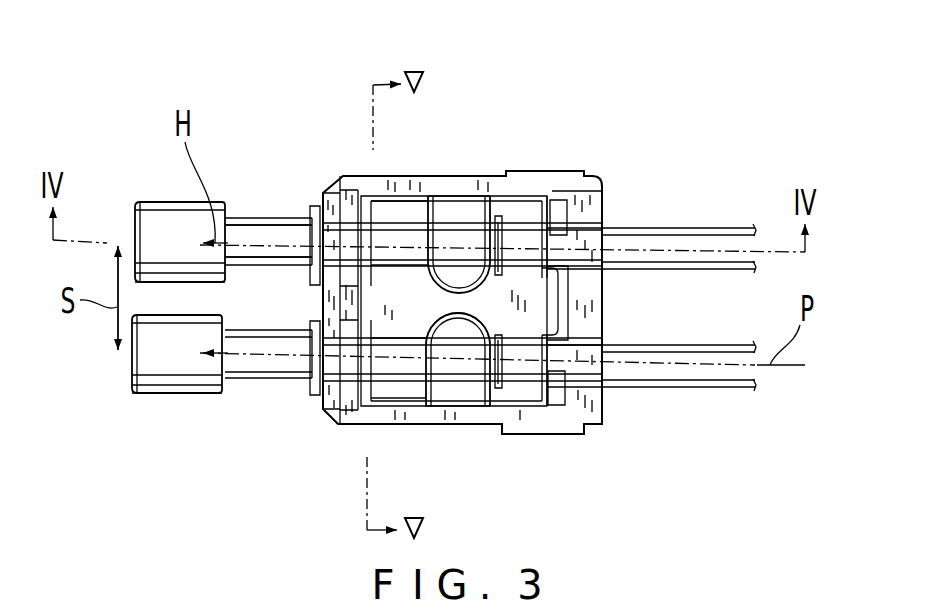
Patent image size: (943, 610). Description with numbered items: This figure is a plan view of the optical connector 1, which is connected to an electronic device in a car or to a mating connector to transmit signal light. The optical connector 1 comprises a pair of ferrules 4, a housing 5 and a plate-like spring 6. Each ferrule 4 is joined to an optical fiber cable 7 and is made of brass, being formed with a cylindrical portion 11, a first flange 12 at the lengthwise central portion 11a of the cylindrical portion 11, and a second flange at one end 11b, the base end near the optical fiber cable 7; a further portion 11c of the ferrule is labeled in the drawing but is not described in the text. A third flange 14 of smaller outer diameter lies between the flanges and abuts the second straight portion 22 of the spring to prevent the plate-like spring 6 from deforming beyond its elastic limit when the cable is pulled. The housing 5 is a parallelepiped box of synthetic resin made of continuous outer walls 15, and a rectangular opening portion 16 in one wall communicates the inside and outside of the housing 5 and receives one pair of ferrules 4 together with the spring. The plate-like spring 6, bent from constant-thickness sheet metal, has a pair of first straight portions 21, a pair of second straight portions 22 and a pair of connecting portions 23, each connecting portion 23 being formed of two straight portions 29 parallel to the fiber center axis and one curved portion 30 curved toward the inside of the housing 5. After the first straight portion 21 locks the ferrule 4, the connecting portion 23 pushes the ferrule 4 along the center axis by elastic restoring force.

The optical connector 1 is at (502, 105).
The ferrule 4 is at (187, 289).
The housing 5 is at (605, 414).
The plate-like spring 6 is at (569, 297).
The optical fiber cable 7 is at (701, 345).
The cylindrical portion 11 is at (293, 214).
The central portion 11a is at (260, 224).
The one end 11b is at (595, 189).
The terminal head portion 11c is at (162, 215).
The first flange 12 is at (365, 193).
The third flange 14 is at (548, 197).
The outer walls 15 is at (313, 401).
The opening portion 16 is at (473, 196).
The first straight portion 21 is at (350, 192).
The second straight portion 22 is at (503, 216).
The connecting portion 23 is at (433, 197).
The straight portion 29 is at (400, 194).
The curved portion 30 is at (445, 318).